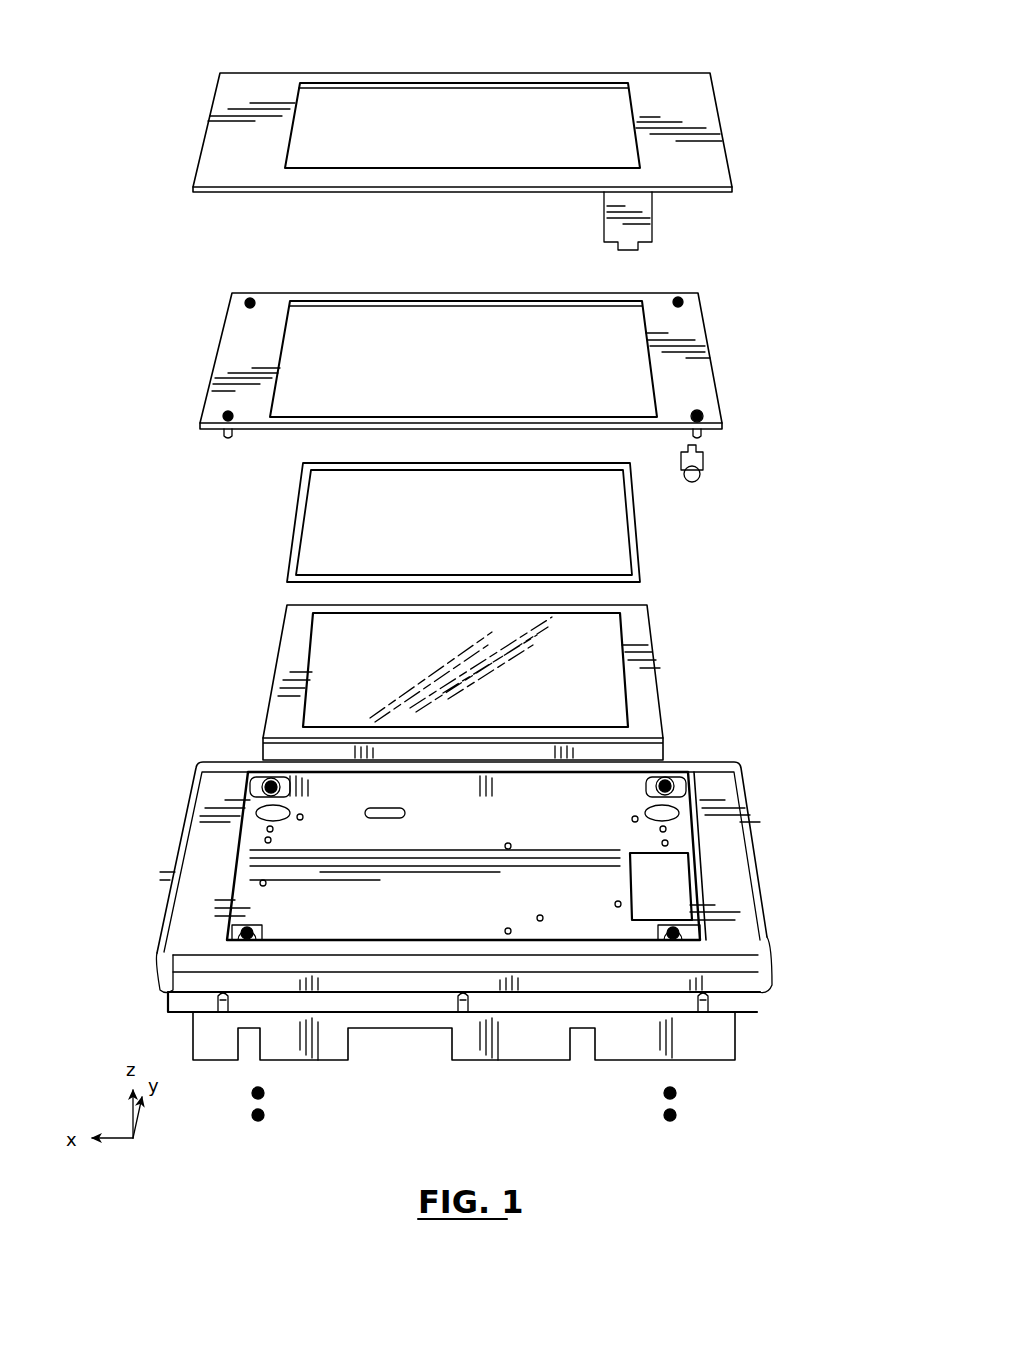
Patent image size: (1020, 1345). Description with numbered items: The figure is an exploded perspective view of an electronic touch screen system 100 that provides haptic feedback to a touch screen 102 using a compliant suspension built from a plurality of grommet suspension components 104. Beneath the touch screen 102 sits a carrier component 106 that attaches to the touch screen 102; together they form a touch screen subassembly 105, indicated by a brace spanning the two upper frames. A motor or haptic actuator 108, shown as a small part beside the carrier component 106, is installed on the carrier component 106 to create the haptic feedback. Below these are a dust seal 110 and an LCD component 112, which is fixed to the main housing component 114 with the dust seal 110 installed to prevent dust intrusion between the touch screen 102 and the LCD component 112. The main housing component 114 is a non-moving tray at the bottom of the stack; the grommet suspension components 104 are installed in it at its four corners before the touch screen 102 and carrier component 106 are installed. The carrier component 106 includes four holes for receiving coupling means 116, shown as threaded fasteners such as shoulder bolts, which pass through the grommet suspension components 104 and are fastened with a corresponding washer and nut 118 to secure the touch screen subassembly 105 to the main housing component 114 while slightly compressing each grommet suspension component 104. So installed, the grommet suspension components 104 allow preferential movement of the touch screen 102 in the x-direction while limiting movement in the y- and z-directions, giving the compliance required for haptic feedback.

The electronic touch screen system 100 is at (838, 272).
The touch screen 102 is at (757, 105).
The grommet suspension components 104 is at (269, 780).
The touch screen subassembly 105 is at (193, 62).
The carrier component 106 is at (728, 341).
The haptic actuator 108 is at (722, 462).
The dust seal 110 is at (651, 534).
The LCD component 112 is at (678, 653).
The main housing component 114 is at (782, 832).
The coupling means 116 is at (700, 413).
The washer and nut 118 is at (695, 1085).